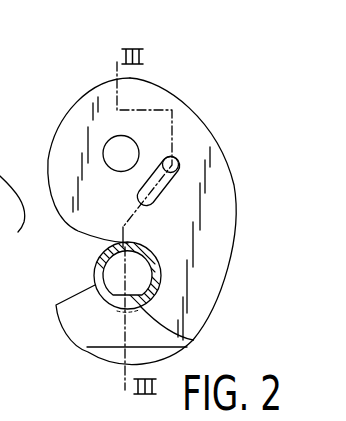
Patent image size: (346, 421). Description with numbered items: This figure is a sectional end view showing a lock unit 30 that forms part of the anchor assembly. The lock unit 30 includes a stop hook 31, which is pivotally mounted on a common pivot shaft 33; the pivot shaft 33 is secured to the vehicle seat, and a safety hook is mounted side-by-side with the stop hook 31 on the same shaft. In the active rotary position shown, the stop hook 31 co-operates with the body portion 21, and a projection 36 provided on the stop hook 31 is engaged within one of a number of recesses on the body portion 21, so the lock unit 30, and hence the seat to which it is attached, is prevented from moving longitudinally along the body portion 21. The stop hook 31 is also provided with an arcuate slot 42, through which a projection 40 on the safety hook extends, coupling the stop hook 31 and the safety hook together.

The body portion 21 is at (96, 257).
The lock unit 30 is at (68, 338).
The stop hook 31 is at (188, 128).
The pivot shaft 33 is at (110, 147).
The projection 36 is at (183, 337).
The projection 40 is at (177, 160).
The arcuate slot 42 is at (157, 197).